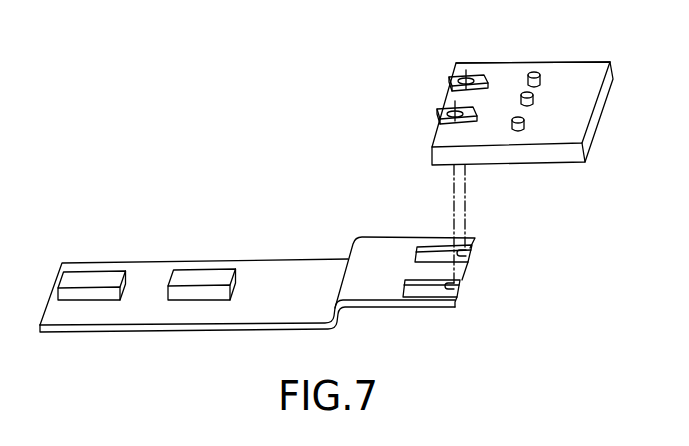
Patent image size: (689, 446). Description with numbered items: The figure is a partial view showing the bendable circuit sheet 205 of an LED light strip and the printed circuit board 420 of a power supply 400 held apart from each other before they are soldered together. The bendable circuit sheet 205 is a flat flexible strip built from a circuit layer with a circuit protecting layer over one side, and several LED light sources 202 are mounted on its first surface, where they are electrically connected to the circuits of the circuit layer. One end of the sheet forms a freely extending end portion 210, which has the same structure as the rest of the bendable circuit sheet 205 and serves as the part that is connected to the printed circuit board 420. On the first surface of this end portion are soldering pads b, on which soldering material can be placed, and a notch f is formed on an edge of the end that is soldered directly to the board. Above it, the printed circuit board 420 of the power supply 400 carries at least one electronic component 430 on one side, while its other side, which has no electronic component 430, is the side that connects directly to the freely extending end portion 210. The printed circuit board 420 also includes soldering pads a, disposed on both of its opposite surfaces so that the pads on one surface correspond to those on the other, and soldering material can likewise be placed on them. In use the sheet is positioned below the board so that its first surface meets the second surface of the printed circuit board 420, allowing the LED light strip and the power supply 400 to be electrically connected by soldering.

The LED light sources 202 is at (88, 278).
The bendable circuit sheet 205 is at (263, 270).
The freely extending end portion 210 is at (427, 269).
The printed circuit board 420 is at (563, 82).
The power supply 400 is at (533, 62).
The electronic component 430 is at (522, 133).
The soldering pads a is at (479, 75).
The soldering pads b is at (417, 287).
The notch f is at (457, 288).